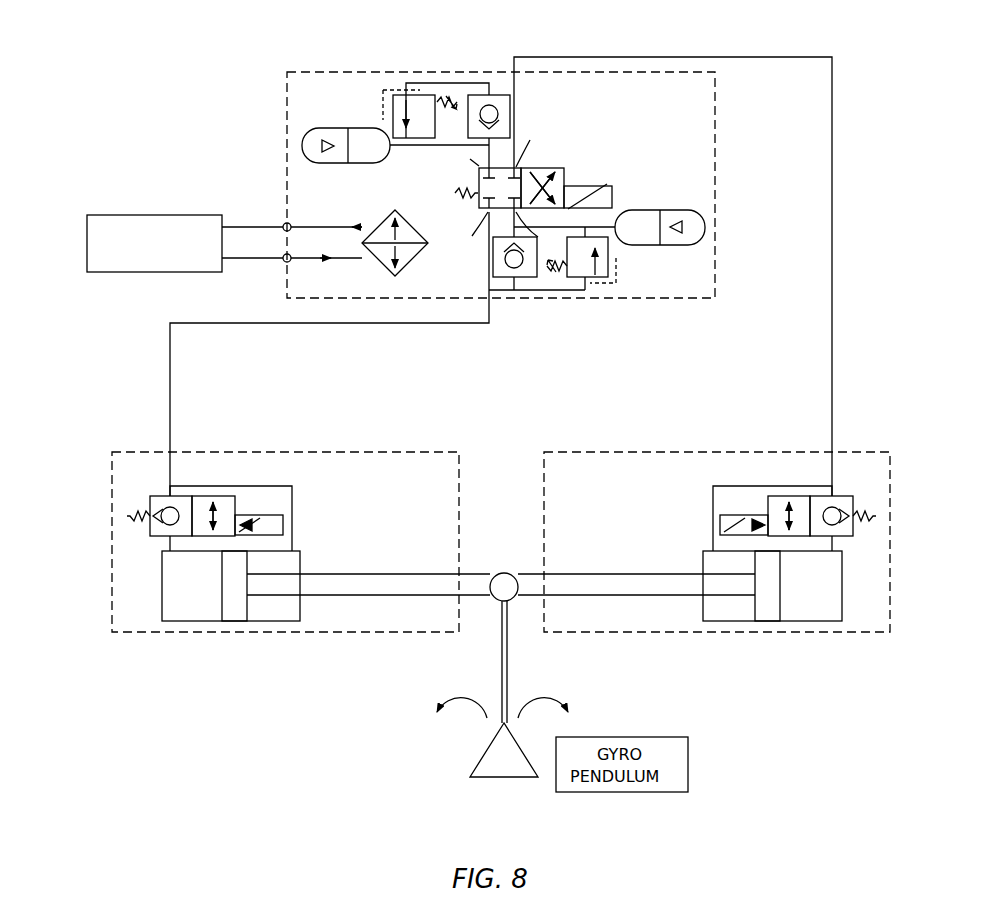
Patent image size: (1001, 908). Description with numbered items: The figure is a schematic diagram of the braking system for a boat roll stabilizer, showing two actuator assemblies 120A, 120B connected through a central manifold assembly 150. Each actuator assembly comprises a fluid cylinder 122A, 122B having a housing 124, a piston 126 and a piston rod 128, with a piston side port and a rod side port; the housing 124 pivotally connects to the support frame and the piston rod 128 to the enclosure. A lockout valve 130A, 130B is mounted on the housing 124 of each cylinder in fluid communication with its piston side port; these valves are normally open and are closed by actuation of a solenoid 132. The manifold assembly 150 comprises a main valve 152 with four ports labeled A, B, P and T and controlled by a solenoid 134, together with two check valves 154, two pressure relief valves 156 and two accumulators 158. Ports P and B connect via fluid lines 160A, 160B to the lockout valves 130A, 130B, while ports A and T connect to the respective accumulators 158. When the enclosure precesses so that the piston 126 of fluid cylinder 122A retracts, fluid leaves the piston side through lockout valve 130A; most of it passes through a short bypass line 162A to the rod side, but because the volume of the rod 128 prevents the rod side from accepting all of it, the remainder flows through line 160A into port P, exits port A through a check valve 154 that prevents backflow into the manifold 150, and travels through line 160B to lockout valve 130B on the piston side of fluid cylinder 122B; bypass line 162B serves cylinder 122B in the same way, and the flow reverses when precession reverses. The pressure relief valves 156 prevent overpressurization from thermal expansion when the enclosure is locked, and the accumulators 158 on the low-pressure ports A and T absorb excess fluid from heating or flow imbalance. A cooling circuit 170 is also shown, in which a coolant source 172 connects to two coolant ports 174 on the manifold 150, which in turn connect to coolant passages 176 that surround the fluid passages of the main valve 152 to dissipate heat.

The actuator assembly 120A is at (285, 542).
The actuator assembly 120B is at (717, 542).
The fluid cylinder 122A is at (266, 625).
The fluid cylinder 122B is at (736, 625).
The housing 124 is at (195, 622).
The piston 126 is at (238, 610).
The piston rod 128 is at (420, 588).
The lockout valve 130A is at (165, 494).
The lockout valve 130B is at (840, 494).
The solenoid 132 is at (262, 515).
The solenoid 134 is at (594, 204).
The manifold assembly 150 is at (501, 185).
The main valve 152 is at (549, 170).
The check valve 154 is at (493, 96).
The pressure relief valve 156 is at (392, 104).
The accumulator 158 is at (310, 130).
The fluid line 160A is at (430, 323).
The fluid line 160B is at (834, 205).
The bypass line 162A is at (250, 486).
The bypass line 162B is at (752, 486).
The cooling circuit 170 is at (216, 183).
The coolant source 172 is at (99, 228).
The coolant port 174 is at (284, 223).
The coolant passage 176 is at (406, 226).